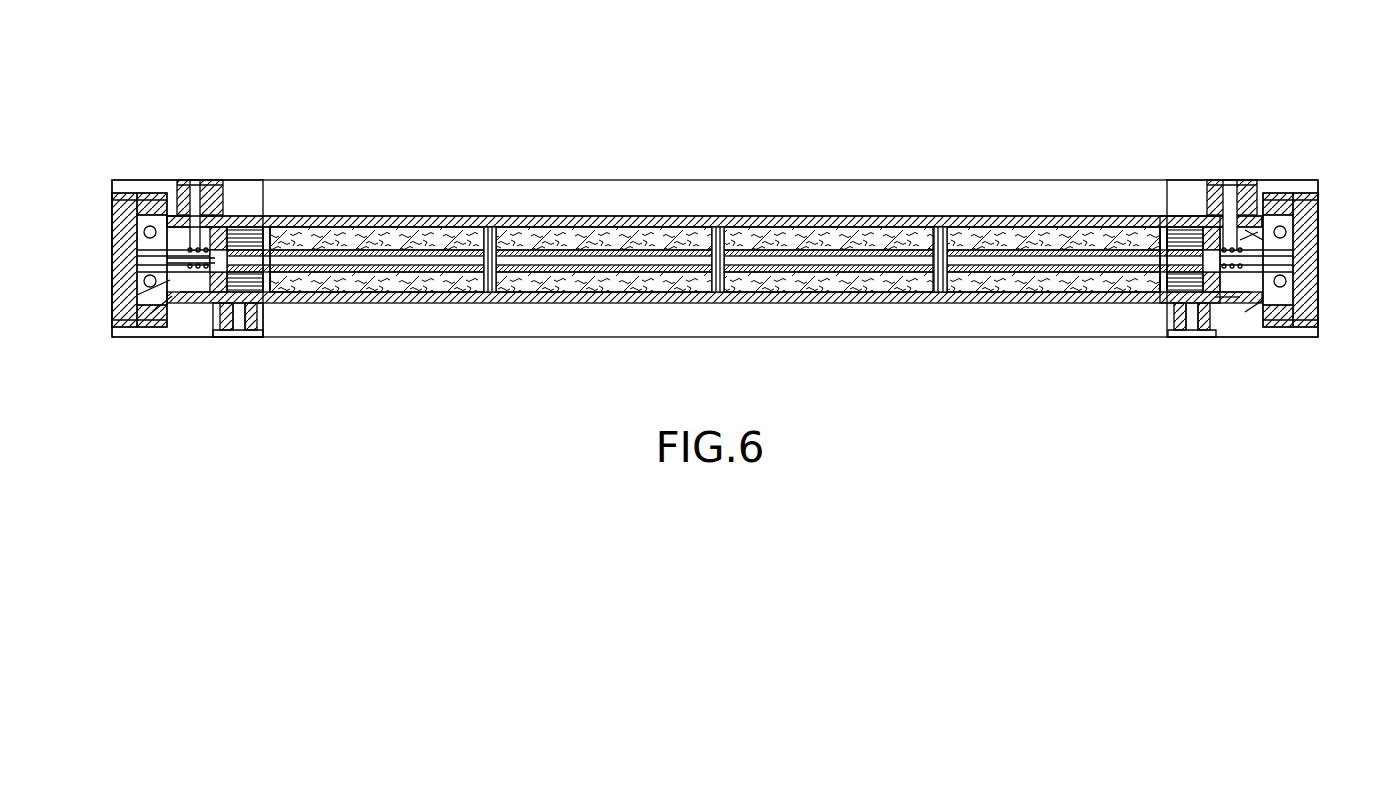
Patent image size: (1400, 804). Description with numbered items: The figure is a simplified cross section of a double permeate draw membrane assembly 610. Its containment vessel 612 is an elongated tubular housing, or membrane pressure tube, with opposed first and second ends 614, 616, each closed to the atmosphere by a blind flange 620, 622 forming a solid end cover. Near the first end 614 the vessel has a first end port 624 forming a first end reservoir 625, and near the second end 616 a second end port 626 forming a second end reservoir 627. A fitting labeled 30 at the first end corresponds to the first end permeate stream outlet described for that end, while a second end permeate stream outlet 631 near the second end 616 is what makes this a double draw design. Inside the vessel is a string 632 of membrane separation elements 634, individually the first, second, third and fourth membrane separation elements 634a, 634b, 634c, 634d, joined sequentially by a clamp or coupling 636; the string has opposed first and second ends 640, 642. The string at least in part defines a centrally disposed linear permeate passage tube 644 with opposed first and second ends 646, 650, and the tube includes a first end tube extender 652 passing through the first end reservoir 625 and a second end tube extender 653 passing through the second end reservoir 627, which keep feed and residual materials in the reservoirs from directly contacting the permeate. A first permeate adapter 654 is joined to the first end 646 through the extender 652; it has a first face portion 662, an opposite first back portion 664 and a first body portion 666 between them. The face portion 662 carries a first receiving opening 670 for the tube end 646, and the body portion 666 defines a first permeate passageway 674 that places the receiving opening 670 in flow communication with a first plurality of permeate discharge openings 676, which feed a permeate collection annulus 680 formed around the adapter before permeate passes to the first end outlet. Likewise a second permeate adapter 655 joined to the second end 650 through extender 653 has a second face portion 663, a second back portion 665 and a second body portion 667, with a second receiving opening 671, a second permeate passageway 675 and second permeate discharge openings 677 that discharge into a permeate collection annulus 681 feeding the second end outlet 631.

The fitting 30 is at (213, 182).
The membrane assembly 610 is at (945, 100).
The containment vessel 612 is at (567, 210).
The first end 614 is at (112, 364).
The second end 616 is at (1248, 392).
The blind flange 620 is at (125, 194).
The blind flange 622 is at (1320, 292).
The first end port 624 is at (255, 338).
The first end reservoir 625 is at (253, 214).
The second end port 626 is at (1166, 336).
The second end reservoir 627 is at (1180, 235).
The second end permeate stream outlet 631 is at (1204, 212).
The membrane separation element string 632 is at (840, 222).
The membrane separation element 634 is at (545, 240).
The first membrane separation element 634a is at (368, 285).
The second membrane separation element 634b is at (590, 285).
The third membrane separation element 634c is at (822, 285).
The fourth membrane separation element 634d is at (990, 285).
The clamp 636 is at (490, 293).
The first end of membrane separation element string 640 is at (271, 320).
The second end of membrane separation element string 642 is at (1140, 324).
The linear permeate passage tube 644 is at (622, 250).
The first end of permeate passage tube 646 is at (242, 212).
The second end of permeate passage tube 650 is at (1180, 256).
The first end tube extender 652 is at (313, 216).
The second end tube extender 653 is at (1200, 304).
The first permeate adapter 654 is at (163, 224).
The second permeate adapter 655 is at (1260, 232).
The first face portion 662 is at (208, 304).
The second face portion 663 is at (1205, 226).
The first back portion 664 is at (148, 262).
The second back portion 665 is at (1318, 216).
The first body portion 666 is at (140, 299).
The second body portion 667 is at (1290, 228).
The first receiving opening 670 is at (196, 246).
The second receiving opening 671 is at (1248, 224).
The first permeate passageway 674 is at (158, 318).
The second permeate passageway 675 is at (1230, 303).
The first plurality of permeate discharge openings 676 is at (113, 214).
The second plurality of permeate discharge openings 677 is at (1270, 312).
The permeate collection annulus 680 is at (217, 304).
The permeate collection annulus 681 is at (1227, 304).